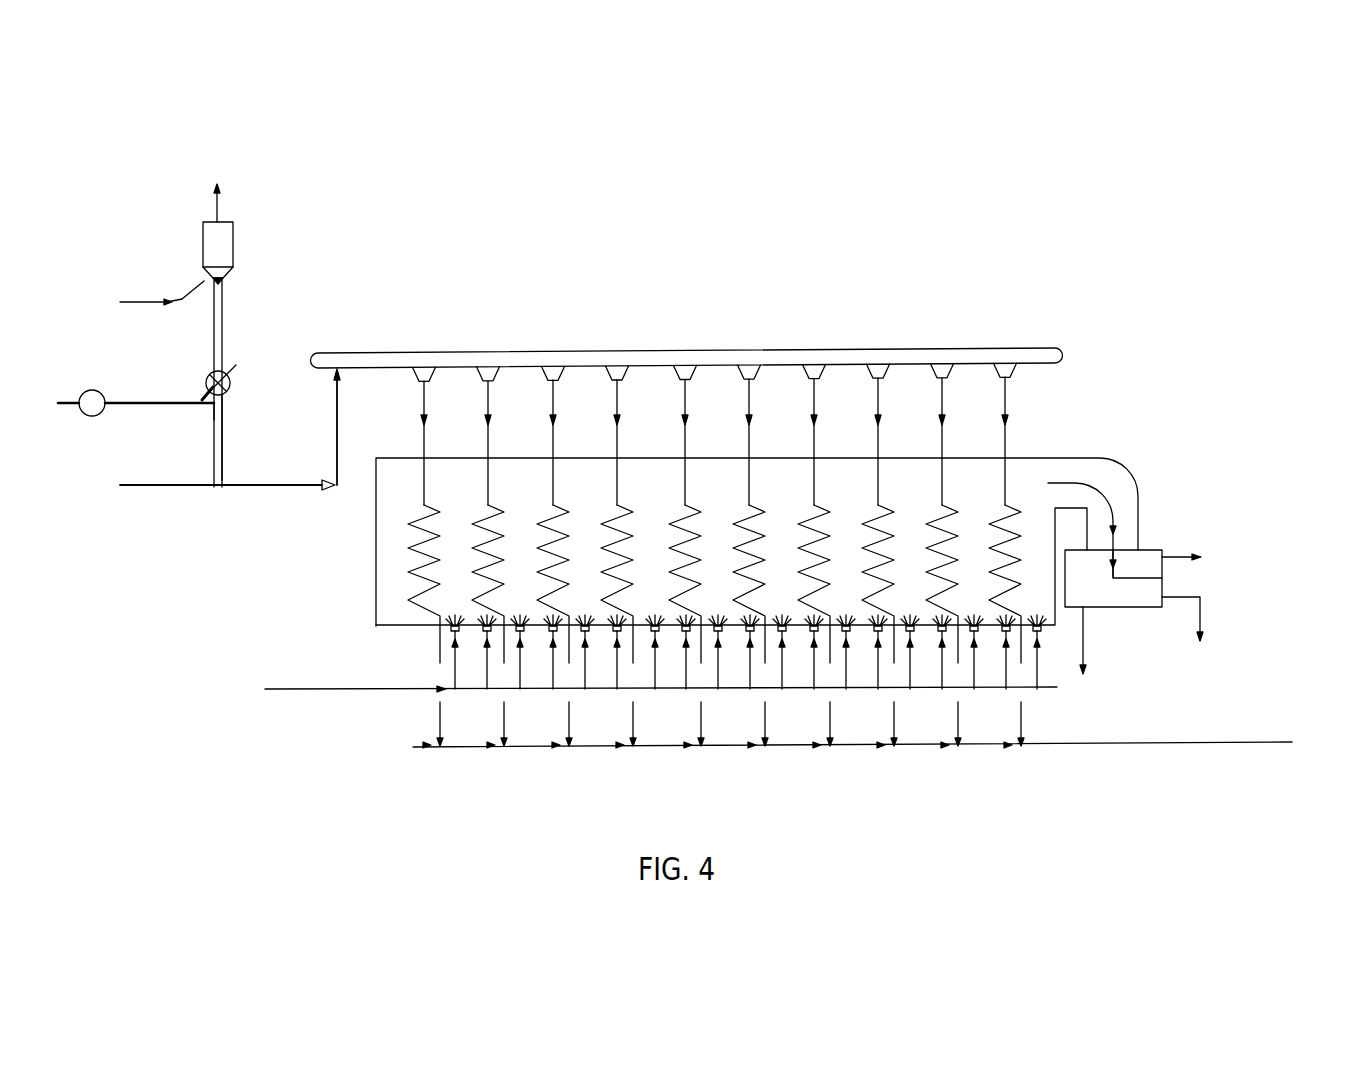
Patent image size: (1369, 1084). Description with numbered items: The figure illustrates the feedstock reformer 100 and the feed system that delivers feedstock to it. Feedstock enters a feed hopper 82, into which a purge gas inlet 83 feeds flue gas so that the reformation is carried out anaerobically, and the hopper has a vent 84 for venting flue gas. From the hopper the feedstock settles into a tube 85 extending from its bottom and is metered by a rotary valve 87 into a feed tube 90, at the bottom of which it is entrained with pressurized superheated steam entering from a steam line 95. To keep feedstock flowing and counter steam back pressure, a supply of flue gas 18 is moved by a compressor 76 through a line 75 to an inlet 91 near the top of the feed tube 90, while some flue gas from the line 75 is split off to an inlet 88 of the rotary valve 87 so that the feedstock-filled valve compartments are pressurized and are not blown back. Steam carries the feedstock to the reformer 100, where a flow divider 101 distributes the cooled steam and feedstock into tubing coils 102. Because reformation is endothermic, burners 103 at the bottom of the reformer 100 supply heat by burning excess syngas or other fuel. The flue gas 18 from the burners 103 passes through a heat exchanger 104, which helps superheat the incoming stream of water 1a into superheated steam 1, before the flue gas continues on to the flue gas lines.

The feed hopper 82 is at (227, 213).
The vent 84 is at (213, 208).
The purge gas inlet 83 is at (130, 298).
The tube 85 is at (223, 345).
The rotary valve 87 is at (208, 378).
The inlet 88 is at (203, 387).
The compressor 76 is at (92, 390).
The line 75 is at (137, 402).
The inlet 91 is at (215, 407).
The feed tube 90 is at (227, 433).
The steam line 95 is at (132, 463).
The feedstock reformer 100 is at (1237, 312).
The flow divider 101 is at (707, 348).
The tubing coils 102 is at (473, 538).
The flue gas 18 is at (1110, 488).
The heat exchanger 104 is at (1122, 610).
The water 1a is at (1085, 640).
The superheated steam 1 is at (1200, 602).
The burners 103 is at (487, 677).